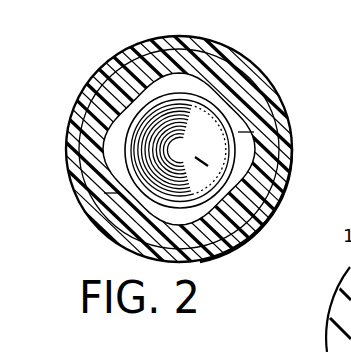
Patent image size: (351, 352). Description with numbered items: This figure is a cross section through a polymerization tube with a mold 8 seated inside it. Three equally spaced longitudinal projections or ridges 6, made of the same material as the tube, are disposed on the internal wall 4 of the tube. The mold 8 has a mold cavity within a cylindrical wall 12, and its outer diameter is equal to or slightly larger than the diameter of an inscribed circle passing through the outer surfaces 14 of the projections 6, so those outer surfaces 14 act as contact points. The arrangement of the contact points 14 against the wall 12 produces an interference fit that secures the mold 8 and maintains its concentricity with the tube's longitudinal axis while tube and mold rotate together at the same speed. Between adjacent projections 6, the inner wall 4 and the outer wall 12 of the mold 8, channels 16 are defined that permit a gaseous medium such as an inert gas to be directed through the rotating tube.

The internal wall 4 is at (199, 38).
The longitudinal projections 6 is at (212, 88).
The mold 8 is at (148, 98).
The cylindrical wall 12 is at (85, 92).
The outer surfaces 14 is at (270, 214).
The channels 16 is at (240, 132).